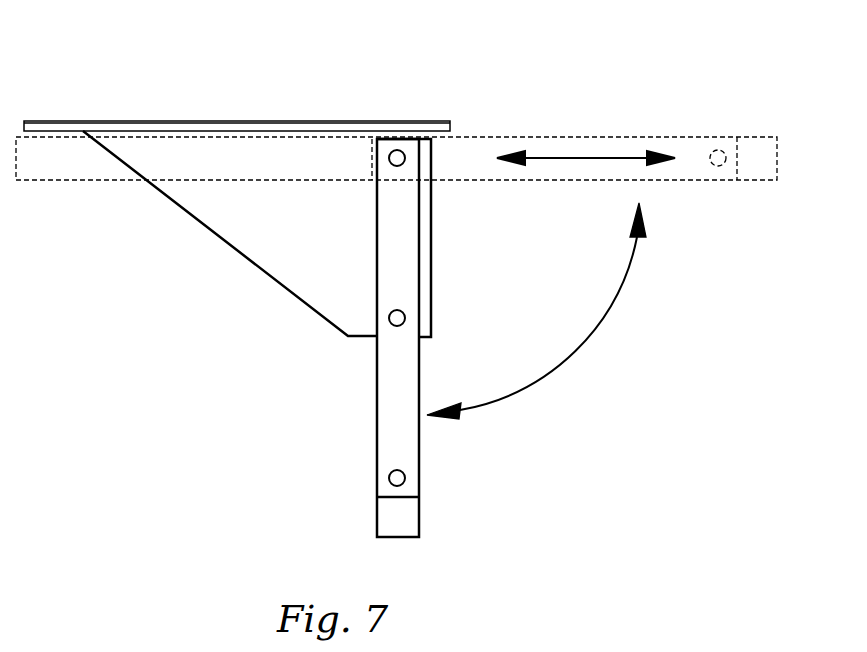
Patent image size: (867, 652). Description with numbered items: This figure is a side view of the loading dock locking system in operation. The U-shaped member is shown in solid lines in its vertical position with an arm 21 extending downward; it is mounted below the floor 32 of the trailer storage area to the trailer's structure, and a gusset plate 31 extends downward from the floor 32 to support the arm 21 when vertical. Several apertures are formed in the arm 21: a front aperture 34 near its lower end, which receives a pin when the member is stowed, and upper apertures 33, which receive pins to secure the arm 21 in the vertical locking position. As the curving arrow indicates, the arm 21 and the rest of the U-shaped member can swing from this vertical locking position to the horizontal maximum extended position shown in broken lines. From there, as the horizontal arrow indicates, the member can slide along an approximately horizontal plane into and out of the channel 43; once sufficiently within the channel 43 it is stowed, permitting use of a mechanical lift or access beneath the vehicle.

The arm 21 is at (419, 475).
The gusset plate 31 is at (224, 218).
The floor 32 is at (143, 121).
The upper apertures 33 is at (397, 310).
The front aperture 34 is at (389, 478).
The channel 43 is at (290, 158).